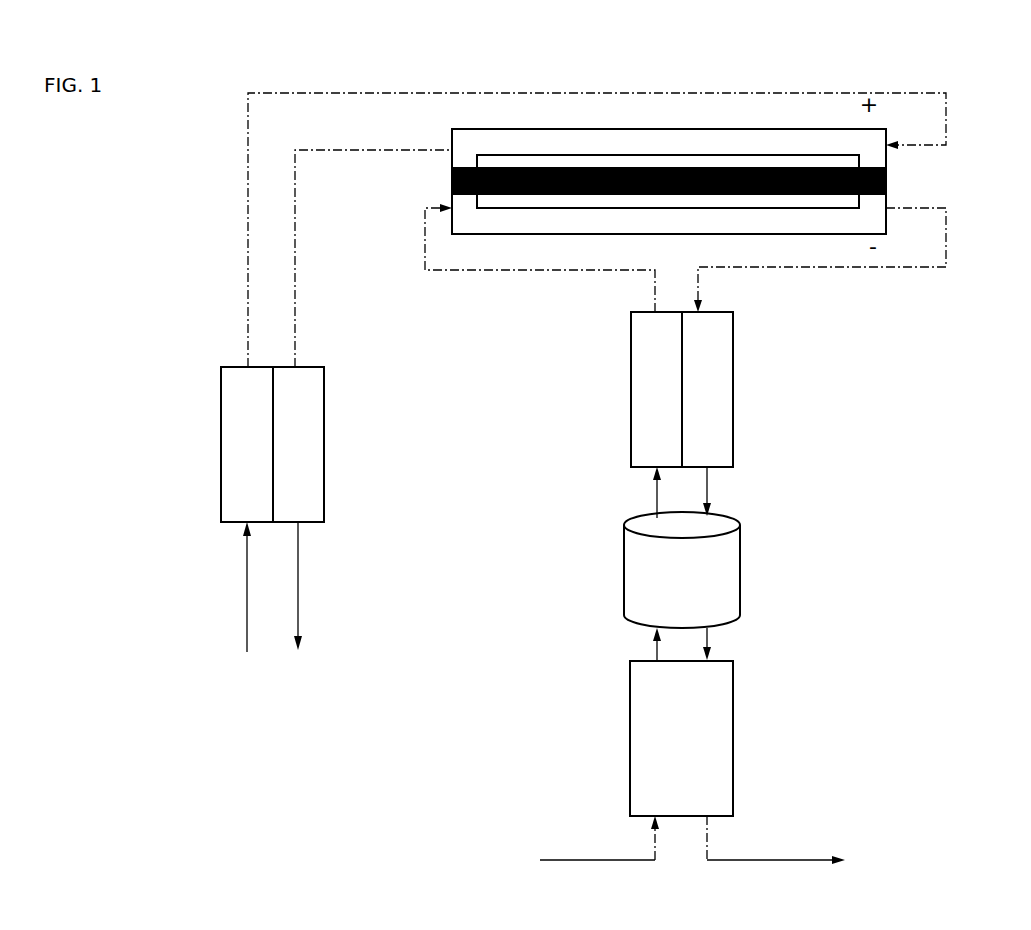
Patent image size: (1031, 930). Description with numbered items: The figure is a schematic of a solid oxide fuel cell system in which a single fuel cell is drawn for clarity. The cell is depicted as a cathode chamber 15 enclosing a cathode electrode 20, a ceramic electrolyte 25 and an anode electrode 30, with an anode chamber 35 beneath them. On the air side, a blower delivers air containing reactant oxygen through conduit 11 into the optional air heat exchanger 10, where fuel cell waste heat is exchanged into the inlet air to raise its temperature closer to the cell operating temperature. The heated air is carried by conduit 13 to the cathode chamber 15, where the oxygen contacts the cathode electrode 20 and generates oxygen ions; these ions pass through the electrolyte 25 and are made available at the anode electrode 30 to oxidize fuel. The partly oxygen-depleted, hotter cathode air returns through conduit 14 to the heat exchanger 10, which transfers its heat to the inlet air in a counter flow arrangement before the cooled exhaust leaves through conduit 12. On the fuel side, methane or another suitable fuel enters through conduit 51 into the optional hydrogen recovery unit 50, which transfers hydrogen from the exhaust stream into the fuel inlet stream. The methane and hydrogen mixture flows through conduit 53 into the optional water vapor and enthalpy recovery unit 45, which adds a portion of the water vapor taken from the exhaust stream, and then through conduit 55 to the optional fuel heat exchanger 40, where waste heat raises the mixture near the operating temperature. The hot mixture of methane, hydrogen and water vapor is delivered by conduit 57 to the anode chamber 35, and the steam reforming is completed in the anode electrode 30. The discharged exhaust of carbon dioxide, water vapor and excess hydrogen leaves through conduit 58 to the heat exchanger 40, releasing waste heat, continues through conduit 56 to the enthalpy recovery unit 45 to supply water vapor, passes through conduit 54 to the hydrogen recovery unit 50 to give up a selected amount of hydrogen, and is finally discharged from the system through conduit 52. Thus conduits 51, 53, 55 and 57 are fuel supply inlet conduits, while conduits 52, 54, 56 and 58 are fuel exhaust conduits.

The air heat exchanger 10 is at (324, 438).
The conduit 11 is at (247, 593).
The conduit 12 is at (298, 595).
The conduit 13 is at (248, 160).
The conduit 14 is at (295, 215).
The cathode chamber 15 is at (723, 137).
The cathode electrode 20 is at (604, 155).
The ceramic electrolyte 25 is at (886, 179).
The anode electrode 30 is at (859, 208).
The anode chamber 35 is at (512, 223).
The fuel heat exchanger 40 is at (733, 363).
The water vapor and enthalpy recovery unit 45 is at (740, 567).
The hydrogen recovery unit 50 is at (733, 723).
The conduit 51 is at (582, 860).
The conduit 52 is at (755, 858).
The conduit 53 is at (650, 632).
The conduit 54 is at (707, 636).
The conduit 55 is at (653, 500).
The conduit 56 is at (707, 490).
The conduit 57 is at (578, 270).
The conduit 58 is at (788, 267).